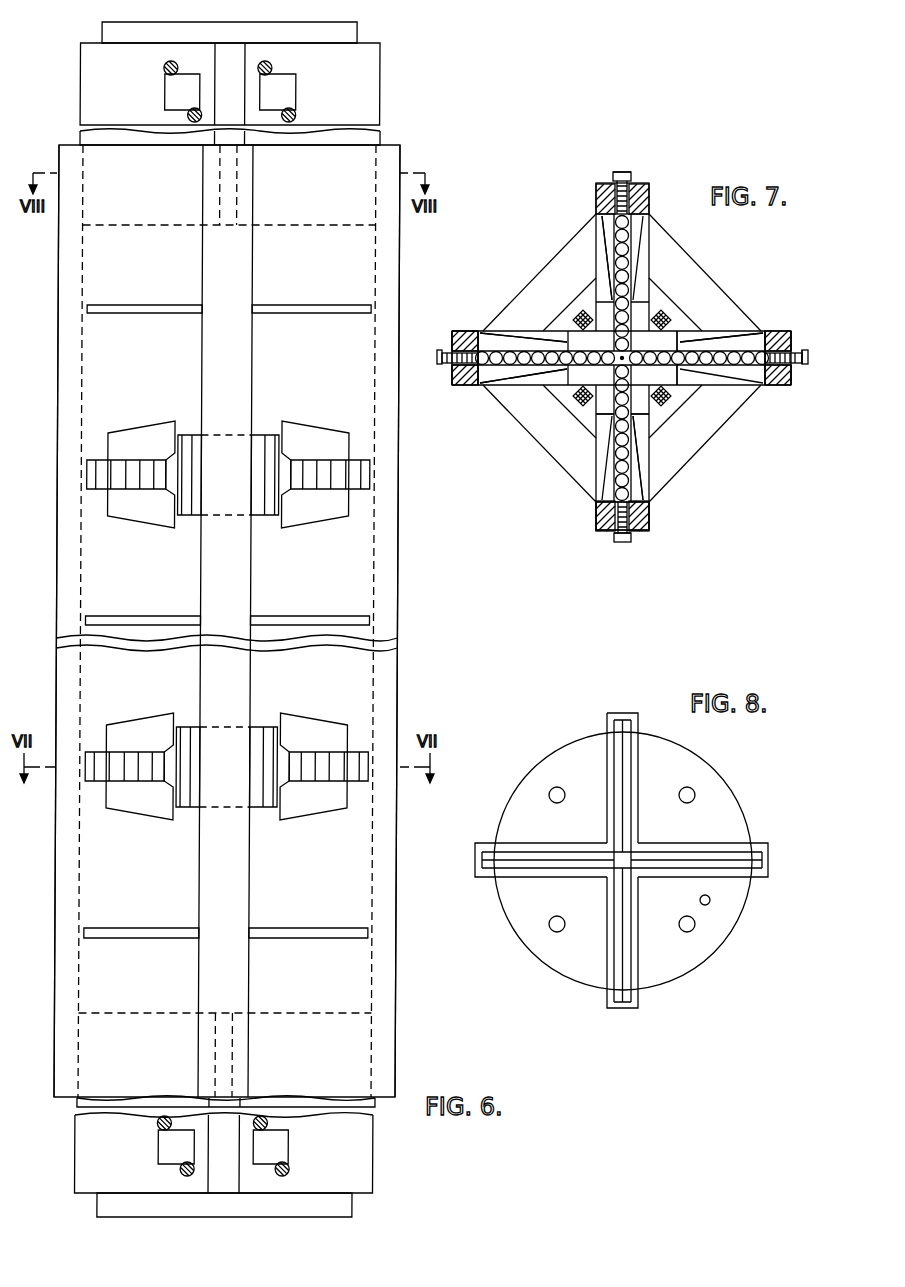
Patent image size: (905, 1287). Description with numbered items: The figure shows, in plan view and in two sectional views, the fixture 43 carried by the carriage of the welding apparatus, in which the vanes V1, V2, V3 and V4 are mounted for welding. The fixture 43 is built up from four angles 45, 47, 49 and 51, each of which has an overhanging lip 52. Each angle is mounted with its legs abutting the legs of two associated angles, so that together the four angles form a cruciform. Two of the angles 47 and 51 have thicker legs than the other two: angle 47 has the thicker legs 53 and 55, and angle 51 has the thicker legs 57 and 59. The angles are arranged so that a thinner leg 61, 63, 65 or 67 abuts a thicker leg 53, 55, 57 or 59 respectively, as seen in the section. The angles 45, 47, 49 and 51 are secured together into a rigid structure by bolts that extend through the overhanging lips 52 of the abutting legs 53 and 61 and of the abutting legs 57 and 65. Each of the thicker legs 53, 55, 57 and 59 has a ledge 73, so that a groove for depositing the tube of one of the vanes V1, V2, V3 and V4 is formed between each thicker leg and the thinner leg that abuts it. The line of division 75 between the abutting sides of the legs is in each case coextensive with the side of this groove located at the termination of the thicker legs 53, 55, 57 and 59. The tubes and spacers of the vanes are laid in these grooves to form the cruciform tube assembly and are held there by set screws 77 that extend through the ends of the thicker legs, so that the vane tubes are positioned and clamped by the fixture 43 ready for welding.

In FIG. 6, the fixture 43 is at (43, 537).
In FIG. 7, the fixture 43 is at (515, 460).
In FIG. 8, the fixture 43 is at (722, 742).
In FIG. 7, the angle 45 is at (652, 420).
In FIG. 8, the angle 45 is at (638, 880).
In FIG. 6, the angle 47 is at (353, 966).
In FIG. 7, the angle 47 is at (680, 328).
In FIG. 8, the angle 47 is at (715, 843).
In FIG. 7, the angle 49 is at (553, 323).
In FIG. 8, the angle 49 is at (607, 818).
In FIG. 6, the angle 51 is at (93, 962).
In FIG. 7, the angle 51 is at (566, 395).
In FIG. 8, the angle 51 is at (552, 877).
In FIG. 6, the overhanging lip 52 is at (65, 1055).
In FIG. 7, the overhanging lip 52 is at (650, 518).
In FIG. 7, the thicker leg 53 is at (758, 338).
In FIG. 7, the thicker leg 55 is at (638, 227).
In FIG. 7, the thicker leg 57 is at (478, 387).
In FIG. 7, the thicker leg 59 is at (603, 493).
In FIG. 7, the thinner leg 61 is at (757, 386).
In FIG. 7, the thinner leg 63 is at (603, 227).
In FIG. 7, the thinner leg 65 is at (483, 332).
In FIG. 7, the thinner leg 67 is at (642, 493).
In FIG. 7, the ledge 73 is at (790, 343).
In FIG. 7, the line of division 75 is at (453, 337).
In FIG. 7, the set screw 77 is at (808, 355).
In FIG. 7, the vane V1 is at (628, 466).
In FIG. 7, the vane V2 is at (715, 338).
In FIG. 7, the vane V3 is at (615, 245).
In FIG. 7, the vane V4 is at (503, 368).